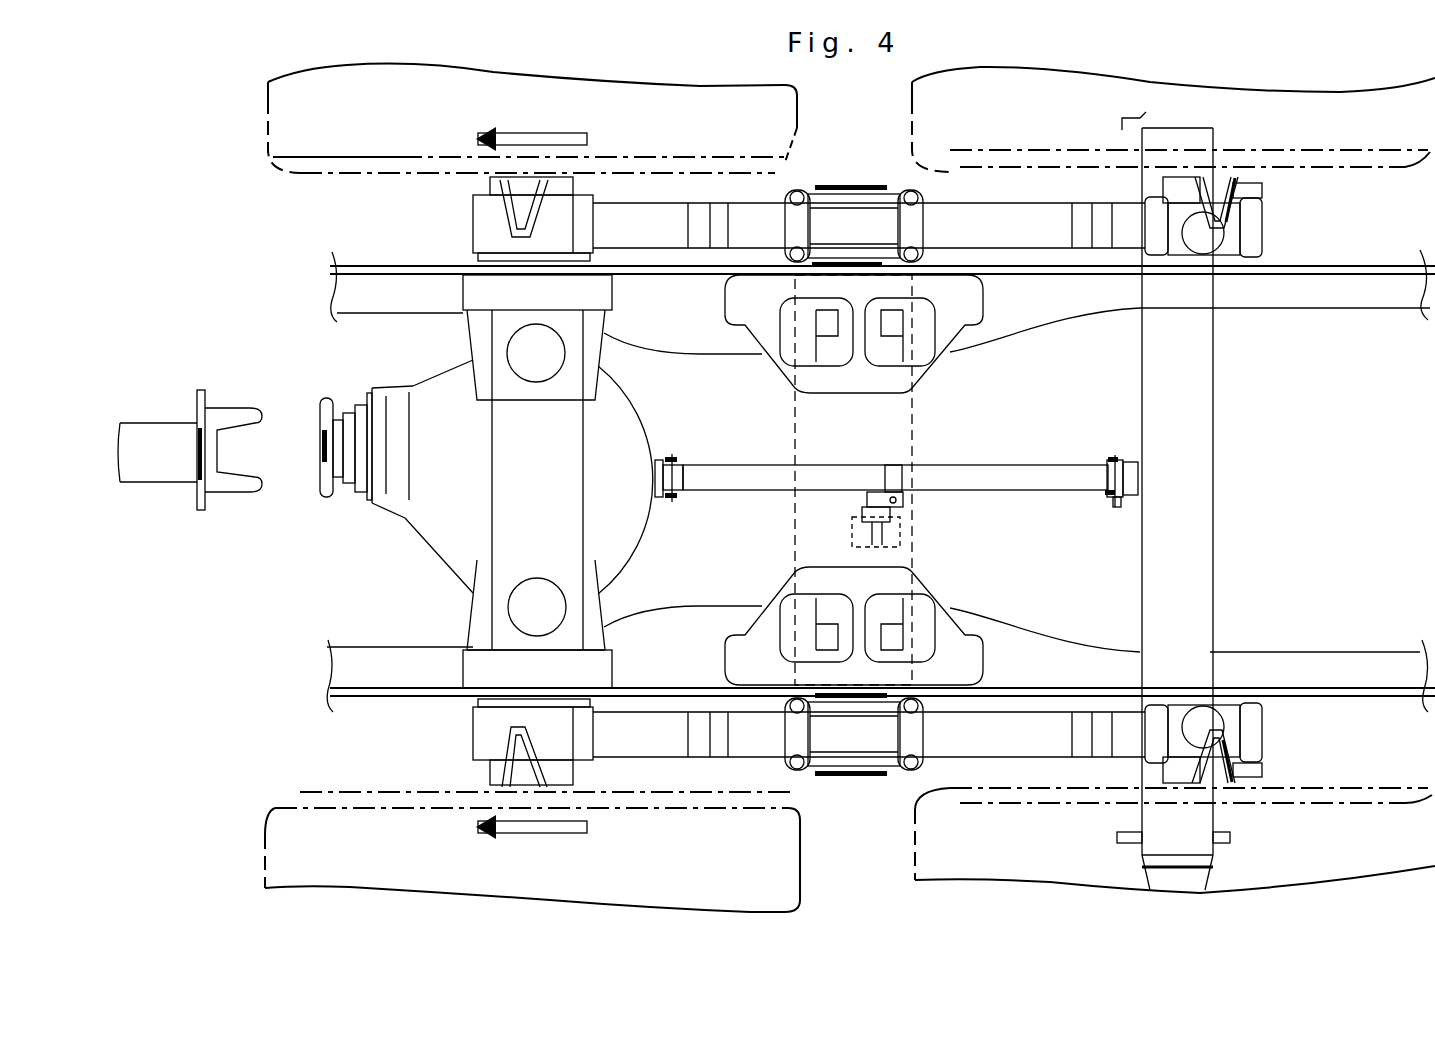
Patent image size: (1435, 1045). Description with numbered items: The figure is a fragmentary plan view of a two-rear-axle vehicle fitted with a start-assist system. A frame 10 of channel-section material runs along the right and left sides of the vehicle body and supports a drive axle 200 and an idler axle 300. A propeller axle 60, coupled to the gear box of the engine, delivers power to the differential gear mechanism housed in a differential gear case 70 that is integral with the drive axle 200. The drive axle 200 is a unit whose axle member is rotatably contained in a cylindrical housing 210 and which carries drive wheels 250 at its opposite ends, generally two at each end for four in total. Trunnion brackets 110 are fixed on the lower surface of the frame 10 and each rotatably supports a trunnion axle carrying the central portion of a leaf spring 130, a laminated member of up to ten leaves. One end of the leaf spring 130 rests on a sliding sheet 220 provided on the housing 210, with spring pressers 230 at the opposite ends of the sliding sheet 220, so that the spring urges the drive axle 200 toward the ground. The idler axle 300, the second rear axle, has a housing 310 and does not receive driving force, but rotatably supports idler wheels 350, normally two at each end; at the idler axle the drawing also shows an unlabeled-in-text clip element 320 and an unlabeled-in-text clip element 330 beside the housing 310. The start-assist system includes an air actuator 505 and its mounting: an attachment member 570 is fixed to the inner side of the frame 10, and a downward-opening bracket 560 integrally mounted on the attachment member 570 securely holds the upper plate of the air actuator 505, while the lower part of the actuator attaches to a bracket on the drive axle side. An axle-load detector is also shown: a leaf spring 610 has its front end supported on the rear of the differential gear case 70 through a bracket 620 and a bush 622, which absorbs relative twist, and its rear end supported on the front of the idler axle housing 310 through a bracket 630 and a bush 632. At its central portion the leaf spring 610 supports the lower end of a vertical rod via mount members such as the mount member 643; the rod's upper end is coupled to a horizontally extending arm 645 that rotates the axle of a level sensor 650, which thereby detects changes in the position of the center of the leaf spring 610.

The frame 10 is at (1272, 290).
The propeller axle 60 is at (160, 440).
The differential gear case 70 is at (437, 397).
The trunnion bracket 110 is at (853, 192).
The leaf spring 130 is at (755, 225).
The drive axle 200 is at (396, 570).
The cylindrical housing 210 is at (563, 527).
The sliding sheet 220 is at (473, 708).
The spring presser 230 is at (493, 772).
The drive wheel 250 is at (431, 129).
The idler axle 300 is at (1248, 549).
The idler axle housing 310 is at (1197, 594).
The right clip body 320 is at (1250, 200).
The right spring clip 330 is at (1243, 182).
The idler wheel 350 is at (1074, 127).
The air actuator 505 is at (533, 353).
The bracket 560 is at (598, 610).
The attachment member 570 is at (473, 670).
The leaf spring 610 is at (1005, 472).
The bracket 620 is at (658, 458).
The bush 622 is at (688, 462).
The bracket 630 is at (1112, 460).
The bush 632 is at (1107, 498).
The mount member 643 is at (905, 492).
The arm 645 is at (880, 520).
The level sensor 650 is at (852, 522).